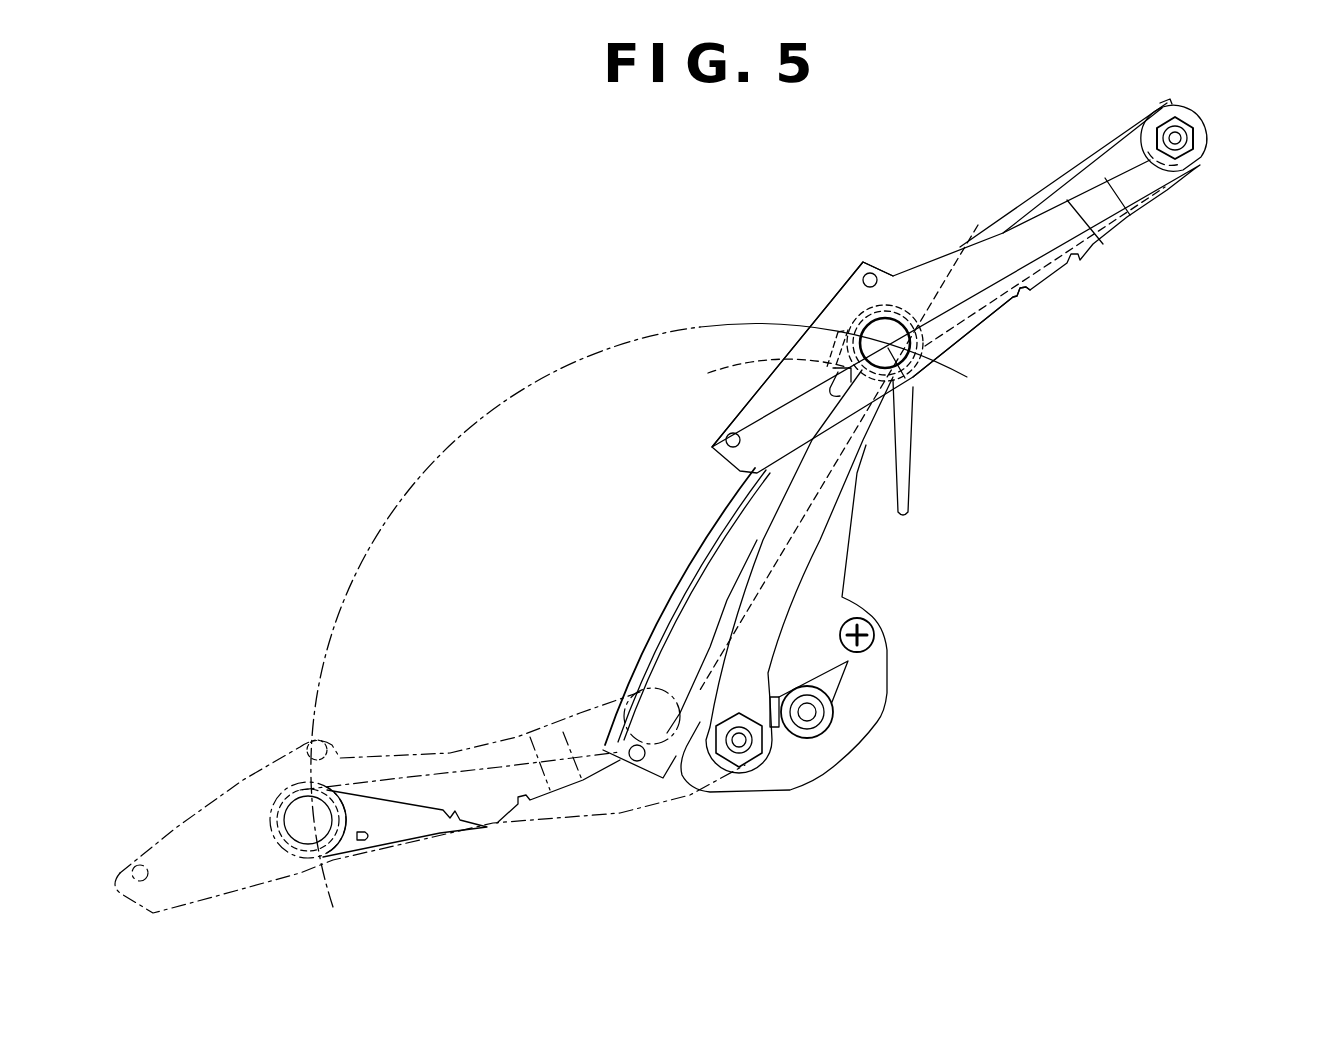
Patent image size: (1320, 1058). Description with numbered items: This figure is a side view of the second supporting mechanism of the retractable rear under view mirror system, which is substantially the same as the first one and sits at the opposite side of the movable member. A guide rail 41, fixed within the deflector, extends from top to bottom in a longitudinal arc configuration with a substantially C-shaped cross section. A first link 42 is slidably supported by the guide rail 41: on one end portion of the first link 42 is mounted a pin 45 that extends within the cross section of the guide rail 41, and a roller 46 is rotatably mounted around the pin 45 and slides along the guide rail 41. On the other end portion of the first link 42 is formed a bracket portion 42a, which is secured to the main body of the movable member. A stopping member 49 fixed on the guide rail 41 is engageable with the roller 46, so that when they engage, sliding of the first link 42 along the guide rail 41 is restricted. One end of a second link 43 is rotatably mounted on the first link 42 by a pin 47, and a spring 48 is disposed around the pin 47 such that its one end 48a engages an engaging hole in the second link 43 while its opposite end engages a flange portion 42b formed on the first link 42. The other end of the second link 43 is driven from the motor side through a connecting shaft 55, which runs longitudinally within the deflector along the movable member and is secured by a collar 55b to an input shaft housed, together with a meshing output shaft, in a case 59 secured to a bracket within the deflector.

The guide rail 41 is at (1026, 146).
The first link 42 is at (1050, 237).
The bracket portion 42a is at (835, 316).
The flange portion 42b is at (1033, 287).
The second link 43 is at (787, 573).
The pin 45 is at (1175, 148).
The roller 46 is at (1284, 75).
The pin 47 is at (913, 388).
The spring 48 is at (893, 295).
The one end of spring 48a is at (710, 356).
The stopping member 49 is at (640, 757).
The connecting shaft 55 is at (815, 722).
The collar 55b is at (835, 712).
The case 59 is at (855, 723).